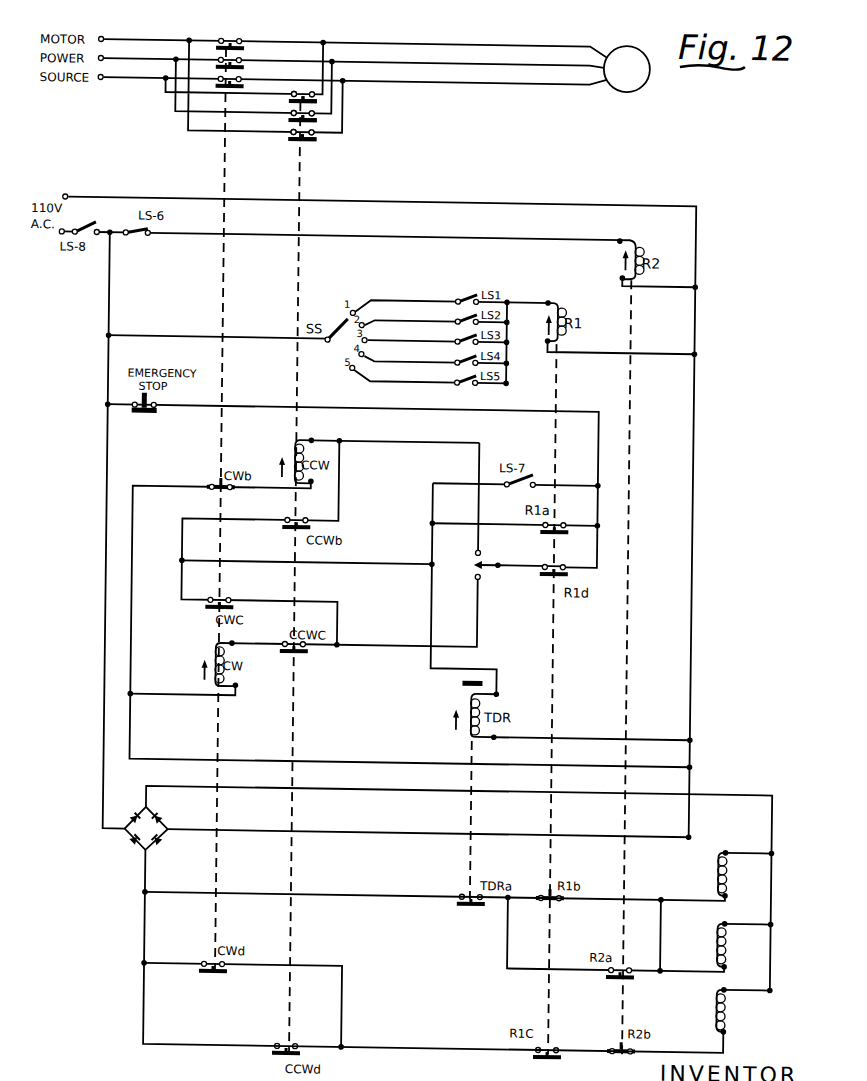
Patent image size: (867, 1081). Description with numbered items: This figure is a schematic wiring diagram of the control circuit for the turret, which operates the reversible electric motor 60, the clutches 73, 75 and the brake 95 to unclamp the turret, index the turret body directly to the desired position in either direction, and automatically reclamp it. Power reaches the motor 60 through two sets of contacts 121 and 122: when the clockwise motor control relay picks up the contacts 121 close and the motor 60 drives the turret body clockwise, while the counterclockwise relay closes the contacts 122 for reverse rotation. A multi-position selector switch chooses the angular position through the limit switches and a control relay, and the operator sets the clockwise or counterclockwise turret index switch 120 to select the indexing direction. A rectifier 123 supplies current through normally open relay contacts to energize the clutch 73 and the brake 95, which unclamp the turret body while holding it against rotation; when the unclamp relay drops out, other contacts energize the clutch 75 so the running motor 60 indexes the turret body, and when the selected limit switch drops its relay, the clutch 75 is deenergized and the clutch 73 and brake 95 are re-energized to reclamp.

The contacts 121 is at (233, 32).
The contacts 122 is at (320, 145).
The reversible electric motor 60 is at (633, 83).
The turret index switch 120 is at (472, 569).
The rectifier 123 is at (128, 834).
The electric clutch 73 is at (756, 873).
The electric brake 95 is at (756, 950).
The electric clutch 75 is at (756, 1030).